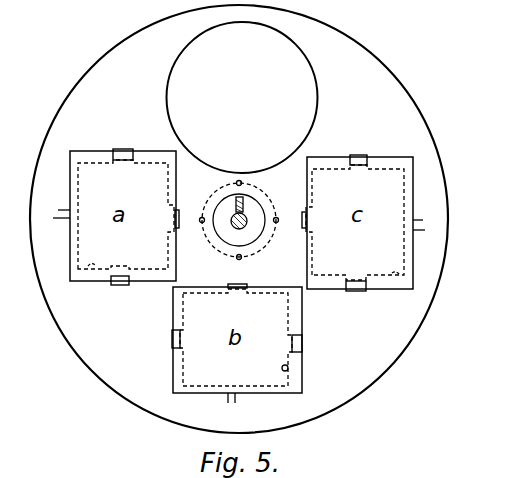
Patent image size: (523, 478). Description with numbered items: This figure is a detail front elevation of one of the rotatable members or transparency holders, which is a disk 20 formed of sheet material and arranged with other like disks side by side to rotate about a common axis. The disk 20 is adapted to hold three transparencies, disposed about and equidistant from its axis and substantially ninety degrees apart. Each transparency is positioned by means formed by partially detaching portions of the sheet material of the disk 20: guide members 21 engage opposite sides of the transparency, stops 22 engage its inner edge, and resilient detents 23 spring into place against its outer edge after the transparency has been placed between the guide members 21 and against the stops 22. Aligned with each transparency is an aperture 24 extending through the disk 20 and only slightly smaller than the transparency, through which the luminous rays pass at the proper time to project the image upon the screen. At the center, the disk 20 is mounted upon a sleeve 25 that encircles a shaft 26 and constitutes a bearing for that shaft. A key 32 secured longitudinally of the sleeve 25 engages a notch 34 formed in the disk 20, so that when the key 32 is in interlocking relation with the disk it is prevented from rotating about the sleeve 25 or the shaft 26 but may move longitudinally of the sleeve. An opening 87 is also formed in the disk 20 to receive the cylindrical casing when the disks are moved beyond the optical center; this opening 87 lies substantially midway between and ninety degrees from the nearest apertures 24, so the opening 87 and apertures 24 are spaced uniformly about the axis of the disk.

The disk 20 is at (411, 108).
The opening 87 is at (298, 50).
The guide members 21 is at (124, 152).
The stops 22 is at (180, 226).
The resilient detents 23 is at (63, 210).
The aperture 24 is at (90, 267).
The sleeve 25 is at (247, 222).
The shaft 26 is at (241, 229).
The key 32 is at (234, 209).
The notch 34 is at (244, 203).